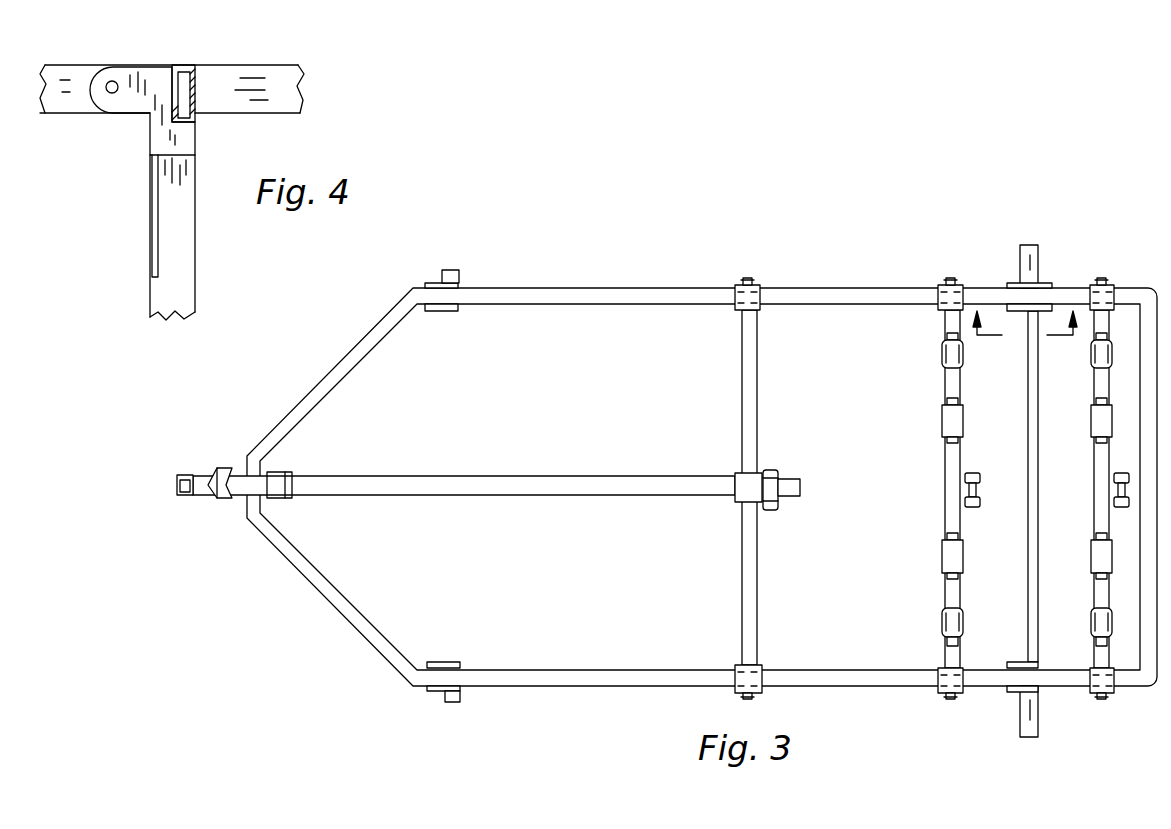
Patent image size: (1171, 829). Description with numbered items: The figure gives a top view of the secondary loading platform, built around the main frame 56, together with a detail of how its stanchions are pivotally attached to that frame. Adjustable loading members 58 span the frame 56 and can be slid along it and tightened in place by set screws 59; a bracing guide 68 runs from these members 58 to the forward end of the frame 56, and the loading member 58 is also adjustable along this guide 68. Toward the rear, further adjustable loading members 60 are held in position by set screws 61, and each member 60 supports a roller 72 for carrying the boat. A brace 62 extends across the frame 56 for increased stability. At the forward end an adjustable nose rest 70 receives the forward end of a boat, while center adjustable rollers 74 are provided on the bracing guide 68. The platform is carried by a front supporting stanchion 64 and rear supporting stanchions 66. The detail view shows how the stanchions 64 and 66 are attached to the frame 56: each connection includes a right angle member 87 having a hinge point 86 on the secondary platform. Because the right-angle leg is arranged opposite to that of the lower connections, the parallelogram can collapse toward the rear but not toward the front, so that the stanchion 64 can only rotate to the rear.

In FIG. 4, the main frame 56 is at (237, 65).
In FIG. 3, the main frame 56 is at (588, 687).
In FIG. 3, the adjustable loading member 58 is at (758, 615).
In FIG. 3, the set screw 59 is at (745, 283).
In FIG. 3, the adjustable loading member 60 is at (962, 462).
In FIG. 3, the set screw 61 is at (950, 282).
In FIG. 3, the brace 62 is at (1027, 598).
In FIG. 4, the front supporting stanchion 64 is at (148, 200).
In FIG. 3, the front supporting stanchion 64 is at (450, 312).
In FIG. 3, the rear supporting stanchion 66 is at (1040, 260).
In FIG. 3, the bracing guide 68 is at (510, 496).
In FIG. 3, the adjustable nose rest 70 is at (198, 496).
In FIG. 3, the roller 72 is at (942, 355).
In FIG. 3, the center adjustable roller 74 is at (778, 478).
In FIG. 4, the hinge point 86 is at (110, 81).
In FIG. 4, the right angle member 87 is at (155, 77).